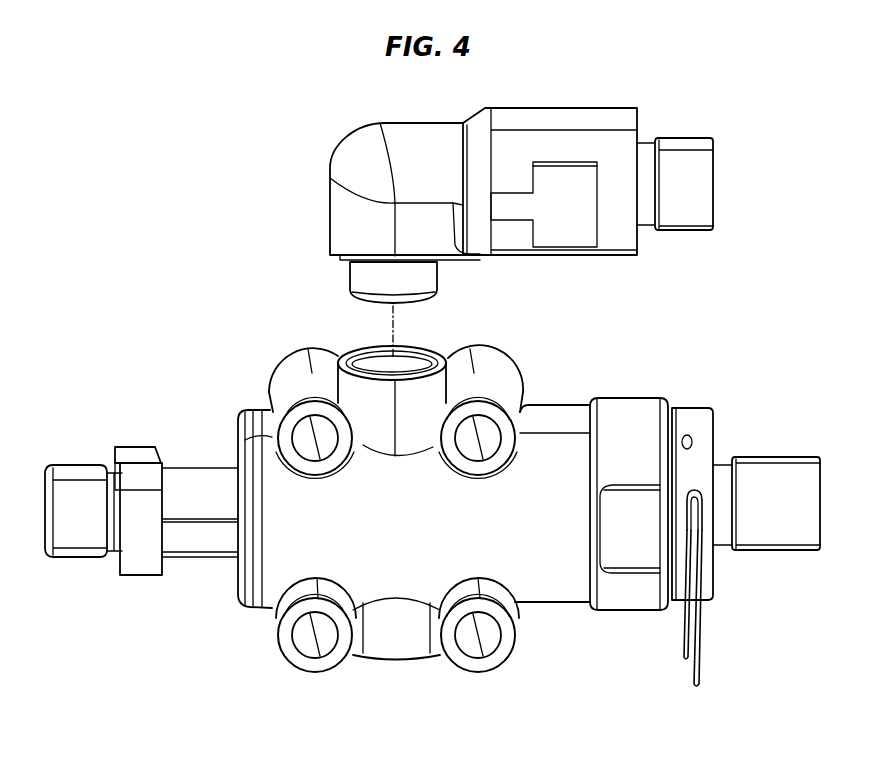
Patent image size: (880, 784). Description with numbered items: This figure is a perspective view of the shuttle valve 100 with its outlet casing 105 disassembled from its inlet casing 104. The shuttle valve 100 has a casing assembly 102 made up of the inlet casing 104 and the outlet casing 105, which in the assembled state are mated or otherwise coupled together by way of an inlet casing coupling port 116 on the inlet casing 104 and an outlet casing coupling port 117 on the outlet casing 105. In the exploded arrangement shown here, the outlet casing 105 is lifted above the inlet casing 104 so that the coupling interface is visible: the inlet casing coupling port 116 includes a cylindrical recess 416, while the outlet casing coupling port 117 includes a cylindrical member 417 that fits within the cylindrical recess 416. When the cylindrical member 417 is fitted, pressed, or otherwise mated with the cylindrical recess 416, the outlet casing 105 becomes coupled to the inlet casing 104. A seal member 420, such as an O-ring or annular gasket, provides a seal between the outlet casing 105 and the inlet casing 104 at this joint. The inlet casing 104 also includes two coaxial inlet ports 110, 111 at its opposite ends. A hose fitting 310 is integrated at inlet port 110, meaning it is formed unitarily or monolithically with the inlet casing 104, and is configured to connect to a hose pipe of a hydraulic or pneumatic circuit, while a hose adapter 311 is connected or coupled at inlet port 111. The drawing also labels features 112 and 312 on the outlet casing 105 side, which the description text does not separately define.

The shuttle valve 100 is at (128, 128).
The casing assembly 102 is at (202, 636).
The inlet casing 104 is at (401, 582).
The outlet casing 105 is at (357, 160).
The inlet port 110 is at (142, 550).
The inlet port 111 is at (637, 552).
The connector housing recess 112 is at (568, 185).
The inlet casing coupling port 116 is at (406, 407).
The outlet casing coupling port 117 is at (470, 280).
The hose fitting 310 is at (78, 487).
The hose adapter 311 is at (707, 417).
The connector fitting 312 is at (687, 167).
The cylindrical recess 416 is at (402, 360).
The cylindrical member 417 is at (358, 286).
The seal member 420 is at (358, 362).